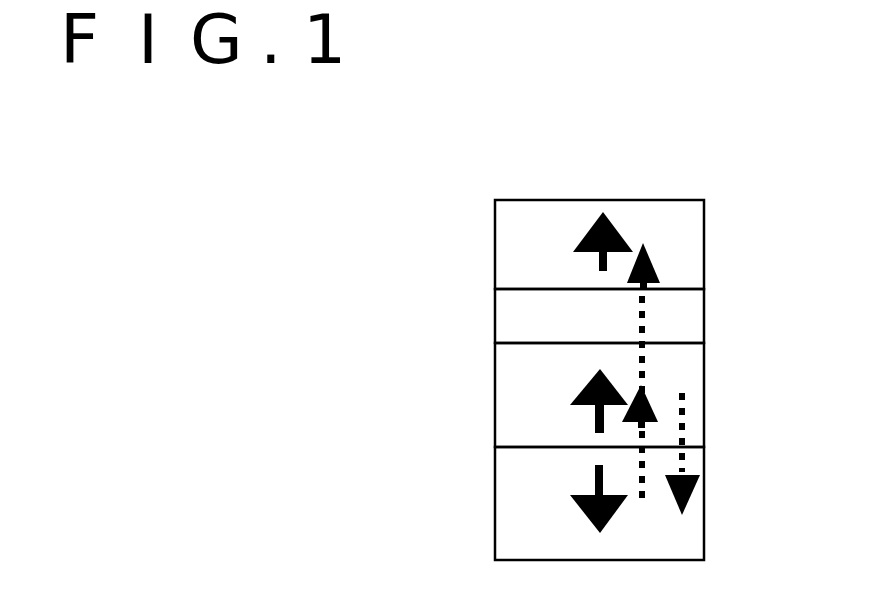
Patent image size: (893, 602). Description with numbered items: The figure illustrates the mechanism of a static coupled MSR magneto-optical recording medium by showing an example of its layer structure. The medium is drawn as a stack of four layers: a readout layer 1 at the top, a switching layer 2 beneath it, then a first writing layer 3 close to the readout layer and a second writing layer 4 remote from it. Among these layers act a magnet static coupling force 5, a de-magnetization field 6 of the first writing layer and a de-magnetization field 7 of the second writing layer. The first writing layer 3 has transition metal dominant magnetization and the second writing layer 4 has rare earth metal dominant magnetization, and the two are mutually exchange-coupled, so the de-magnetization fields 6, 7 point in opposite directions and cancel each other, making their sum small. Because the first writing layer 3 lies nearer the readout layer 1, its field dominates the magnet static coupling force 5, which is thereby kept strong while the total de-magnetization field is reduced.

The readout layer 1 is at (488, 253).
The switching layer 2 is at (495, 323).
The first writing layer 3 is at (495, 400).
The second writing layer 4 is at (492, 505).
The magnet static coupling force 5 is at (648, 308).
The de-magnetization field of the first writing layer 6 is at (690, 417).
The de-magnetization field of the second writing layer 7 is at (647, 473).